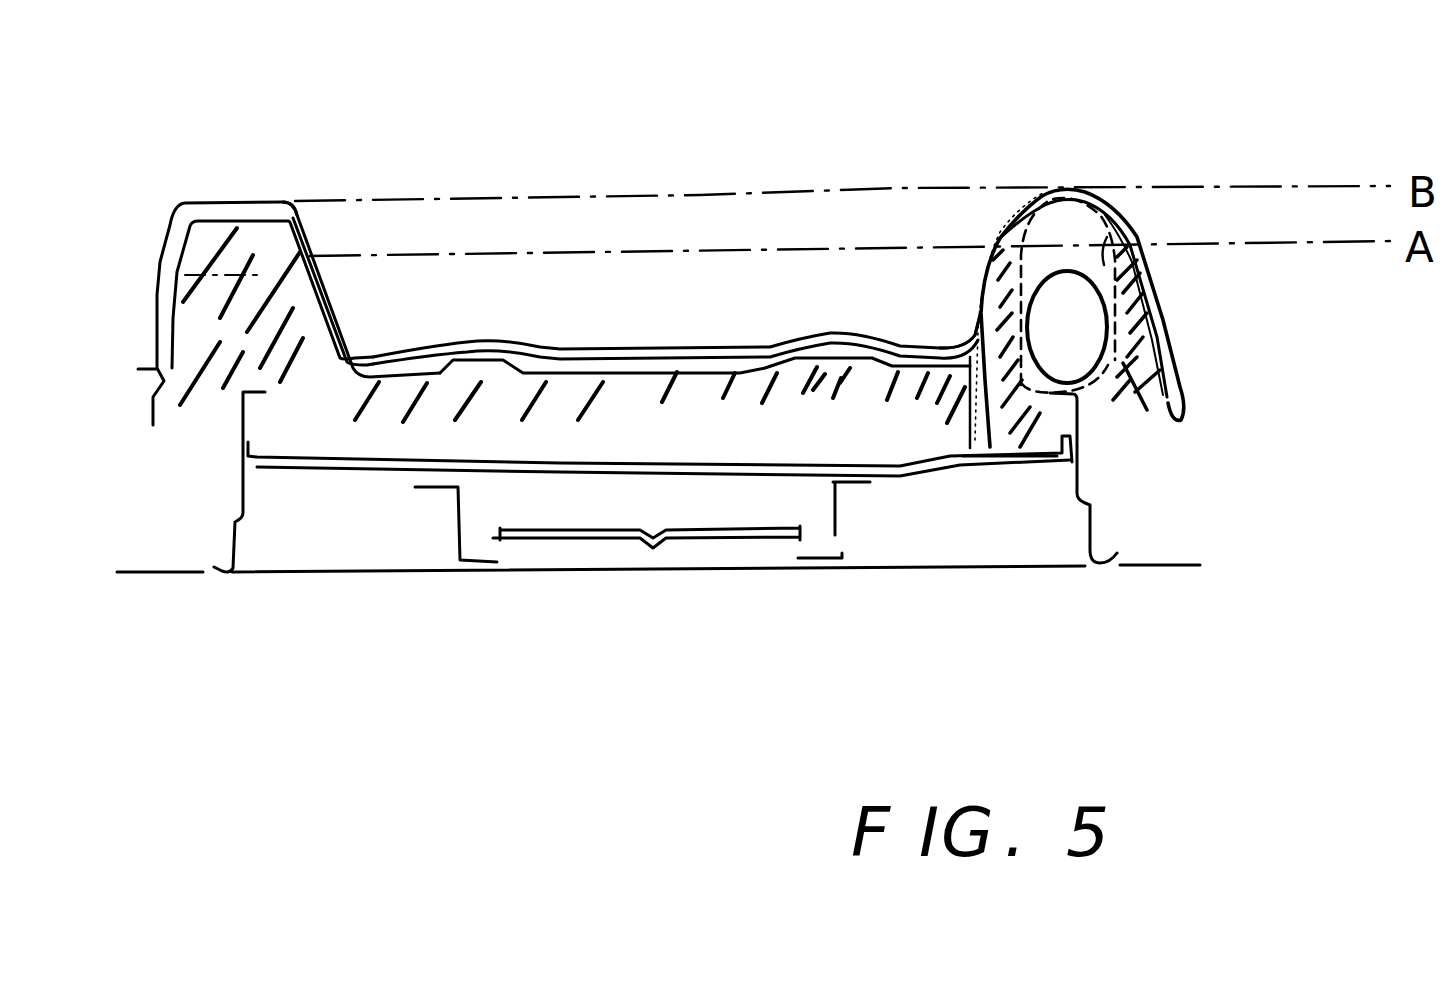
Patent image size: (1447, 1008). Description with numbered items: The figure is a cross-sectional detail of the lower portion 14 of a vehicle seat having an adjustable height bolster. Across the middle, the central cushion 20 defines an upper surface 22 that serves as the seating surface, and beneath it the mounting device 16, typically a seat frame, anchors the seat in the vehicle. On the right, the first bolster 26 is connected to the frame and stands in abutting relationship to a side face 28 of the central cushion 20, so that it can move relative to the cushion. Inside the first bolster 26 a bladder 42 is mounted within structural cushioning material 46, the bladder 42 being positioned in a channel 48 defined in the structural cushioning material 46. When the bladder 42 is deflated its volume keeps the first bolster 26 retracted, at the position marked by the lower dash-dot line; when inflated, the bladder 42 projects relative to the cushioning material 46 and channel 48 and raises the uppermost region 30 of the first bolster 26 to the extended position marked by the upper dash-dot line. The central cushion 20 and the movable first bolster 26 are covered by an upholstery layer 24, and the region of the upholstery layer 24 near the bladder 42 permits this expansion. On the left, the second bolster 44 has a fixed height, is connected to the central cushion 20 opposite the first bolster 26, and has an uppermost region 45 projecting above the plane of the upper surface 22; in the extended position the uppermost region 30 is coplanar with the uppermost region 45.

The lower portion 14 is at (940, 140).
The mounting device 16 is at (1108, 512).
The central cushion 20 is at (770, 368).
The upper surface 22 is at (690, 450).
The upholstery layer 24 is at (400, 343).
The first bolster 26 is at (1145, 339).
The side face 28 is at (972, 325).
The uppermost region 30 is at (1066, 186).
The bladder 42 is at (1125, 355).
The second bolster 44 is at (215, 315).
The uppermost region 45 is at (291, 206).
The structural cushioning material 46 is at (1148, 301).
The channel 48 is at (1107, 237).